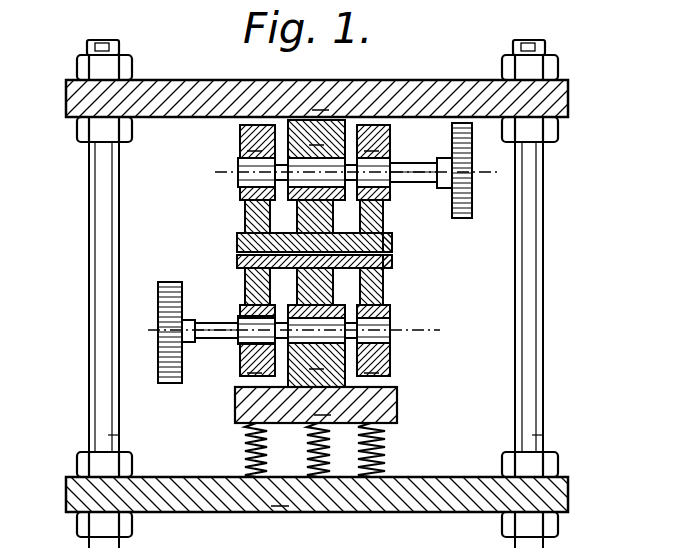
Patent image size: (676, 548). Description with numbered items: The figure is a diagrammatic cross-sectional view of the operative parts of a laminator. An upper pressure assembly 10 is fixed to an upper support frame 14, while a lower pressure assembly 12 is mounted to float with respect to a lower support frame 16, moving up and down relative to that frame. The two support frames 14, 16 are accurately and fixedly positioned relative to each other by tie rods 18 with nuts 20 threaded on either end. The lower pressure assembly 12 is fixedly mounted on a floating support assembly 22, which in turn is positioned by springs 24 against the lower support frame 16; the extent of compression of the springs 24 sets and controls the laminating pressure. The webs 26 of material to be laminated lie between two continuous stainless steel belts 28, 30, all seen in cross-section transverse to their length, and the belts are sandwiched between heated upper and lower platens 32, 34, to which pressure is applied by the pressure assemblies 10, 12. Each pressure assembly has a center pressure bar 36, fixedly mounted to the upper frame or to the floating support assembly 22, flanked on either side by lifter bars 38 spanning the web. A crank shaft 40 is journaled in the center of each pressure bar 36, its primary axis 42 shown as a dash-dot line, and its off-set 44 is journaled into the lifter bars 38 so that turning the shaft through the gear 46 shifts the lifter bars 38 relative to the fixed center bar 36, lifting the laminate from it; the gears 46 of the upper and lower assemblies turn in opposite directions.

The upper pressure assembly 10 is at (206, 194).
The lower pressure assembly 12 is at (468, 314).
The upper support frame 14 is at (200, 96).
The lower support frame 16 is at (204, 497).
The tie rods 18 is at (105, 284).
The nuts 20 is at (80, 70).
The floating support assembly 22 is at (395, 407).
The springs 24 is at (318, 458).
The webs 26 is at (393, 253).
The upper continuous belt 28 is at (397, 246).
The lower continuous belt 30 is at (393, 266).
The upper platen 32 is at (237, 244).
The lower platen 34 is at (237, 260).
The center pressure bar 36 is at (338, 282).
The lifter bars 38 is at (390, 142).
The crank shaft 40 is at (420, 184).
The primary axis 42 is at (228, 172).
The off-set 44 is at (240, 189).
The gear 46 is at (473, 204).